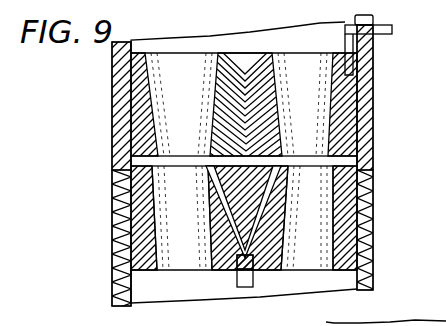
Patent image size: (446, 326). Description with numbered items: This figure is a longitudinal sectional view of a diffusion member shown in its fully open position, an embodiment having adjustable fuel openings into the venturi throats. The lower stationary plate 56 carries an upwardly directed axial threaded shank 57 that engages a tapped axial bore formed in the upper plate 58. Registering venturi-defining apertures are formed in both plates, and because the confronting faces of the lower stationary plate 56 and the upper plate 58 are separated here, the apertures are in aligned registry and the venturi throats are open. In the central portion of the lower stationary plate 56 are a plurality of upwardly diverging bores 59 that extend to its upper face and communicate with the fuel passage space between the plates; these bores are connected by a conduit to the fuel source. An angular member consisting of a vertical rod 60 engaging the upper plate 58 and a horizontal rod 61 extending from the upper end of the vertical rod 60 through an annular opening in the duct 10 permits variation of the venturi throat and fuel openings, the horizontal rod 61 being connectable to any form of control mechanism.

The duct 10 is at (370, 137).
The lower stationary plate 56 is at (346, 197).
The axial threaded shank 57 is at (256, 54).
The upper plate 58 is at (348, 95).
The upwardly diverging bores 59 is at (285, 250).
The vertical rod 60 is at (348, 45).
The horizontal rod 61 is at (393, 30).